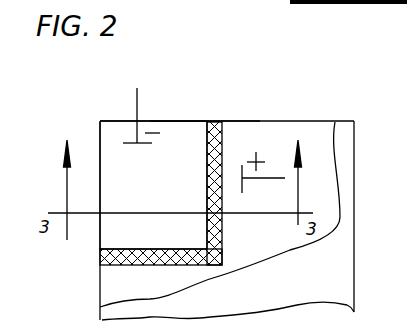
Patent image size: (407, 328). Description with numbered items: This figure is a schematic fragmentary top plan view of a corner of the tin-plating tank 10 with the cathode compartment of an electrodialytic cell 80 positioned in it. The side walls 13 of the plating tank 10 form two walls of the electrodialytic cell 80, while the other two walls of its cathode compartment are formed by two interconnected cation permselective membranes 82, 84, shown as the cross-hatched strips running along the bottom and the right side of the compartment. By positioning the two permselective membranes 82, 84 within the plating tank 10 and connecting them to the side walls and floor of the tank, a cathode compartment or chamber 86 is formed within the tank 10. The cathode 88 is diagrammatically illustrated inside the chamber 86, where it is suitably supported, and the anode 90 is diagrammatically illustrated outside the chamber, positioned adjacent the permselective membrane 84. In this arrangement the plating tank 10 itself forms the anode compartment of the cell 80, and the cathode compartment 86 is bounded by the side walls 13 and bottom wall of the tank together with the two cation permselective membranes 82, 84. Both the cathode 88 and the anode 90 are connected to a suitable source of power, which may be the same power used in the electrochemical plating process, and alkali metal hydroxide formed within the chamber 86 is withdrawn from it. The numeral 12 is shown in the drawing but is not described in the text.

The plating tank 10 is at (278, 107).
The chamber 12 is at (157, 198).
The side walls 13 is at (98, 150).
The electrodialytic cell 80 is at (199, 108).
The cation permselective membrane 82 is at (133, 265).
The cation permselective membrane 84 is at (222, 138).
The cathode compartment 86 is at (170, 130).
The cathode 88 is at (137, 99).
The anode 90 is at (258, 180).